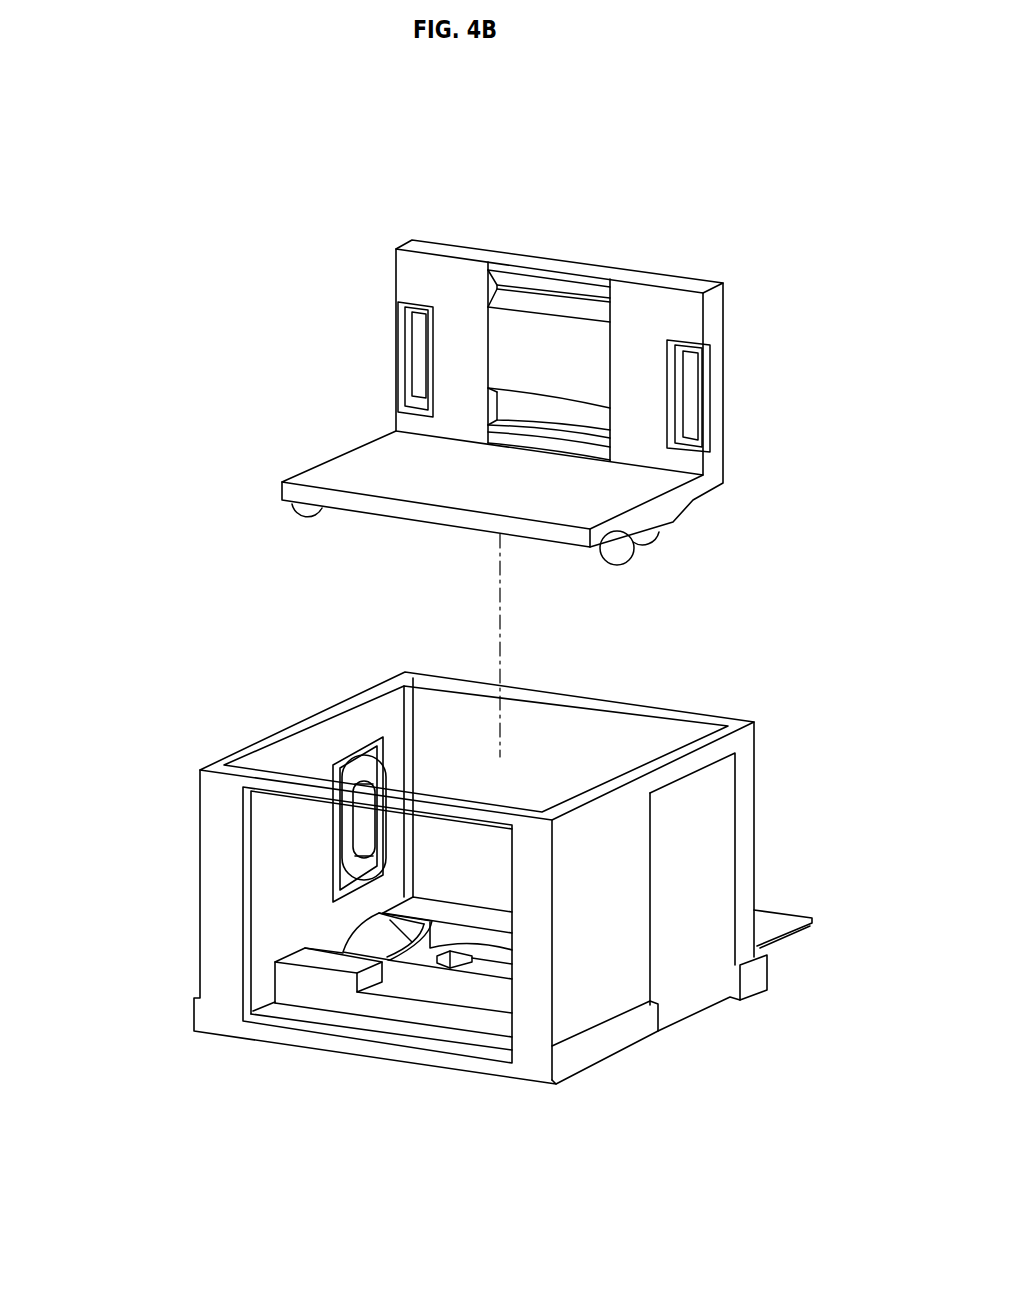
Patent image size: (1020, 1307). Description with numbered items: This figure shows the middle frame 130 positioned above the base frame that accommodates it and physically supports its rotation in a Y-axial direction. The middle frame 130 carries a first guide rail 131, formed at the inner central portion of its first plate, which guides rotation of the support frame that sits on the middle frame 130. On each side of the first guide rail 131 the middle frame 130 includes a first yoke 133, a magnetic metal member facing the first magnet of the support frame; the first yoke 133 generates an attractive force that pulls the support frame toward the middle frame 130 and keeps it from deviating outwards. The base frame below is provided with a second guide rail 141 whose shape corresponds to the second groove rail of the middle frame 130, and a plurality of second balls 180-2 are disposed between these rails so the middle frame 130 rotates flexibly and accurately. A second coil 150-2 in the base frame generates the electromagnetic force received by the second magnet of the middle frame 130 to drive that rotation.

The middle frame 130 is at (690, 267).
The first guide rail 131 is at (560, 408).
The first yoke 133 is at (420, 348).
The second guide rail 141 is at (382, 943).
The second coil 150-2 is at (473, 962).
The second balls 180-2 is at (627, 556).